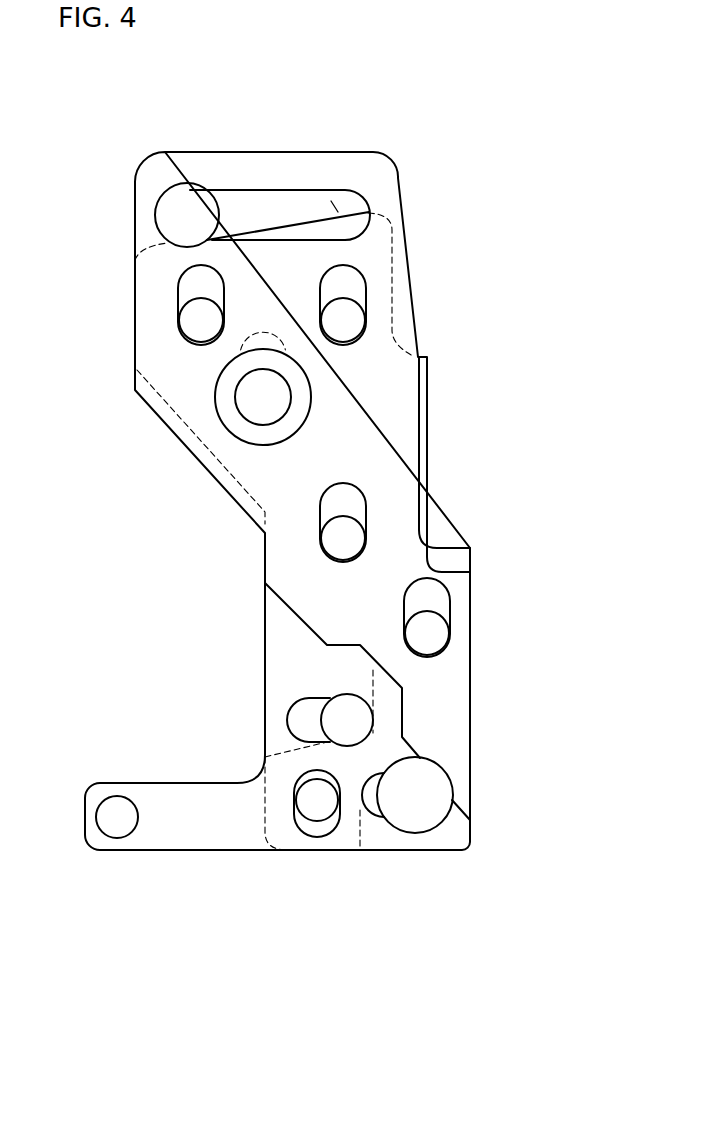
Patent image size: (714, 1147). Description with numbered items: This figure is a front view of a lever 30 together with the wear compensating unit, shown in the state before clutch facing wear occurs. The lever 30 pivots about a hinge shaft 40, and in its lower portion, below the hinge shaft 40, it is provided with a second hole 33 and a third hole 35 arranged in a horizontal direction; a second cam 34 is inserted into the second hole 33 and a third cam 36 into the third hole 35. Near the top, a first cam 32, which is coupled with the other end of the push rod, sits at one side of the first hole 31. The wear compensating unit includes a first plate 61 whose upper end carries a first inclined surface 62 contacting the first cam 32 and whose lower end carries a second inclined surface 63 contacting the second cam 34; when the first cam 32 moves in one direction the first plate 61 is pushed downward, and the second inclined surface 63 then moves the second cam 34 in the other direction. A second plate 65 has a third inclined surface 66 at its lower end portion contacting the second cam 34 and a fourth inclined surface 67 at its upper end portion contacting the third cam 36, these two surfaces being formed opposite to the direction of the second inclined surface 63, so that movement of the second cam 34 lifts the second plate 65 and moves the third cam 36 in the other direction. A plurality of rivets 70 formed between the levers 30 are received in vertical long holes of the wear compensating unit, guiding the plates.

The lever 30 is at (370, 170).
The first hole 31 is at (336, 207).
The first cam 32 is at (190, 207).
The second hole 33 is at (365, 806).
The second cam 34 is at (430, 793).
The third hole 35 is at (310, 719).
The third cam 36 is at (347, 720).
The hinge shaft 40 is at (265, 397).
The first plate 61 is at (390, 446).
The first inclined surface 62 is at (298, 223).
The second inclined surface 63 is at (457, 822).
The second plate 65 is at (277, 845).
The third inclined surface 66 is at (380, 790).
The fourth inclined surface 67 is at (280, 753).
The rivets 70 is at (345, 543).